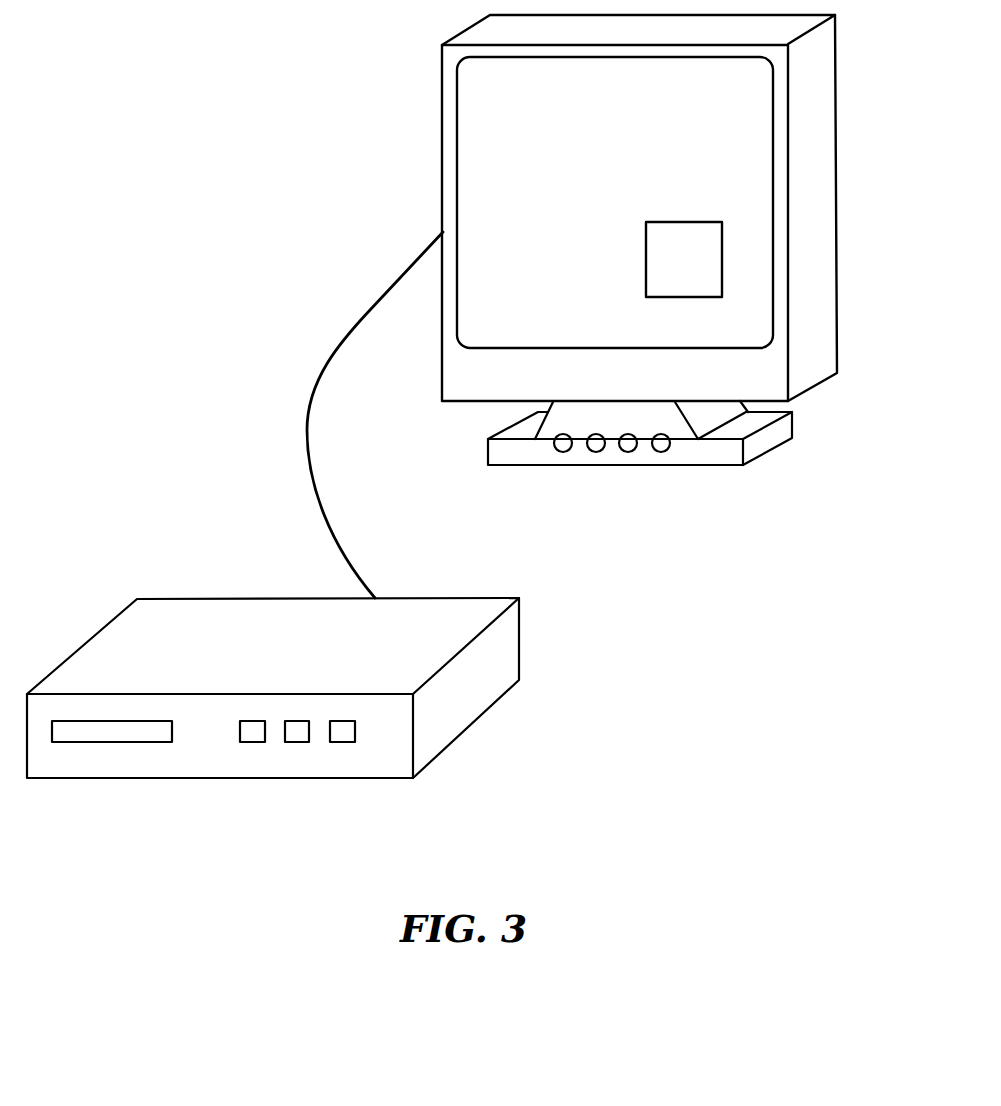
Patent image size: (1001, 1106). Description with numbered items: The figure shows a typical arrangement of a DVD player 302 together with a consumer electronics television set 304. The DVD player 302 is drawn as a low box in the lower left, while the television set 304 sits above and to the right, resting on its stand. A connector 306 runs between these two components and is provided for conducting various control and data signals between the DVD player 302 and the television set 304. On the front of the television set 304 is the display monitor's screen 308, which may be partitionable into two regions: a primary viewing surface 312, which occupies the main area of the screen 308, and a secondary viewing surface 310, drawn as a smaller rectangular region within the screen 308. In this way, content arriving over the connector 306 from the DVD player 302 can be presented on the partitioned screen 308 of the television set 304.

The DVD player 302 is at (477, 688).
The consumer electronics television set 304 is at (757, 443).
The connector 306 is at (307, 413).
The display monitor's screen 308 is at (512, 106).
The secondary viewing surface 310 is at (702, 255).
The primary viewing surface 312 is at (753, 105).